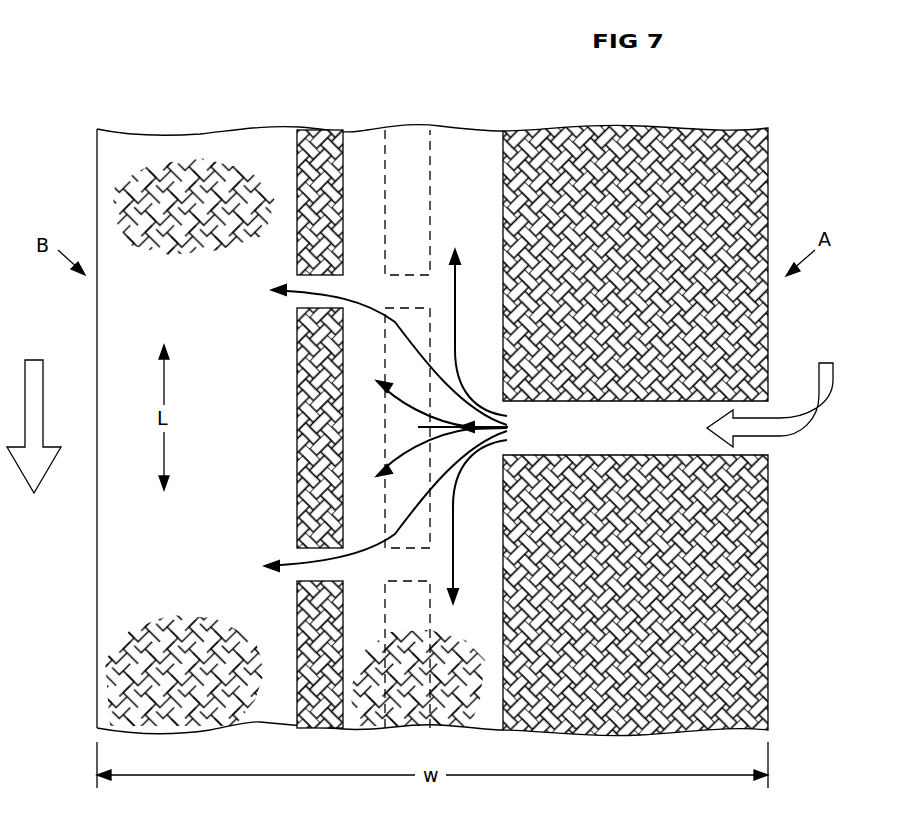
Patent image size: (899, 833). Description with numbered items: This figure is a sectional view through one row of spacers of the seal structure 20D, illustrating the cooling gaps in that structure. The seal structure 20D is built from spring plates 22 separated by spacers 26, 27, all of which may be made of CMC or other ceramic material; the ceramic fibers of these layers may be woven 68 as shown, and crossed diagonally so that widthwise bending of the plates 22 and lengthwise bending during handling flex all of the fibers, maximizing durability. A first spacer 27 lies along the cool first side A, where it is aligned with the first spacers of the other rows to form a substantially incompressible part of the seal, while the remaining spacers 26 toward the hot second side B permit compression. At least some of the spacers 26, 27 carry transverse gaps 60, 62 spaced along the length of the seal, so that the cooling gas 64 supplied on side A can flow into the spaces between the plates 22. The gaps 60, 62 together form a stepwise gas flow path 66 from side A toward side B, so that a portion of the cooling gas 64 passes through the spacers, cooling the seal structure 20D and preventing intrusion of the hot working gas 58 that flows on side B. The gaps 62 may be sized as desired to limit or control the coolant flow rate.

The seal structure 20D is at (198, 95).
The plates 22 is at (243, 515).
The spacers 26 is at (297, 170).
The first spacer 27 is at (503, 172).
The woven fibers 68 is at (768, 179).
The transverse gap 60 is at (705, 456).
The cooling gas flow 64 is at (808, 427).
The stepwise gas flow path 66 is at (274, 291).
The transverse gap 62 is at (300, 338).
The hot working gas flow 58 is at (44, 376).